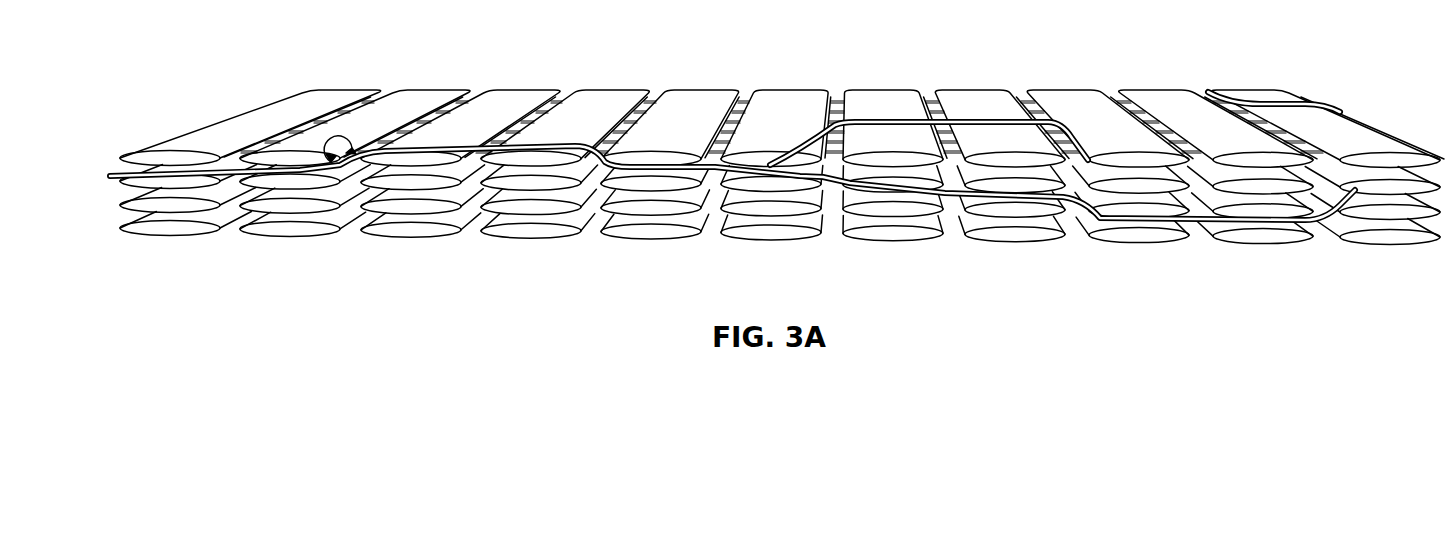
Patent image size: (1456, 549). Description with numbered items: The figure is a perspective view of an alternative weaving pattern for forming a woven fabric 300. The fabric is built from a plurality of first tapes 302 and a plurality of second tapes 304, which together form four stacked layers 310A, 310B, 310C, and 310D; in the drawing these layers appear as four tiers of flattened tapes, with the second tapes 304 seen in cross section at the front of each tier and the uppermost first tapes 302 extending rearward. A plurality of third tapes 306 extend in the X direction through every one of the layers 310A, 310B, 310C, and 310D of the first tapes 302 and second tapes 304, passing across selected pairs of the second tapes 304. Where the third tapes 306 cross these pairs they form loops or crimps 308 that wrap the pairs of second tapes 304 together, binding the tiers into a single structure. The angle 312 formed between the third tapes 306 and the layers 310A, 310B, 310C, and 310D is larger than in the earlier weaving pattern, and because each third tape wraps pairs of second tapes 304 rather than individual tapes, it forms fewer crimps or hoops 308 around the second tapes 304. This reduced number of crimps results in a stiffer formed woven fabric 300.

The woven fabric 300 is at (900, 150).
The first tapes 302 is at (723, 147).
The second tapes 304 is at (250, 124).
The third tapes 306 is at (517, 147).
The loops or crimps 308 is at (433, 147).
The layer 310A is at (170, 158).
The layer 310B is at (143, 177).
The layer 310C is at (137, 210).
The layer 310D is at (190, 232).
The angle 312 is at (337, 140).